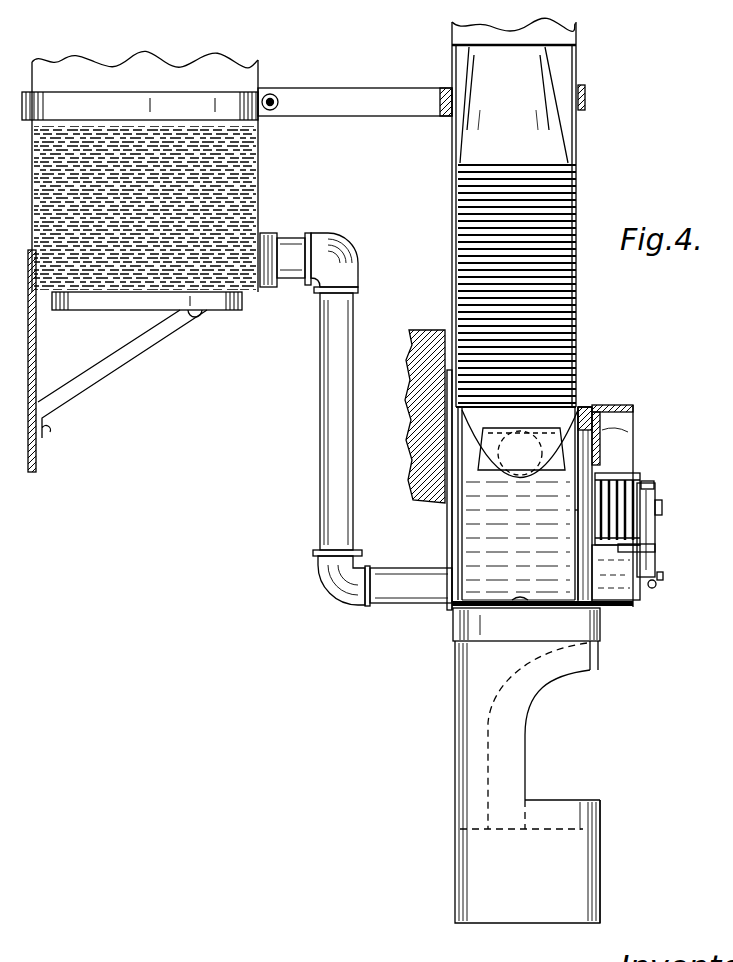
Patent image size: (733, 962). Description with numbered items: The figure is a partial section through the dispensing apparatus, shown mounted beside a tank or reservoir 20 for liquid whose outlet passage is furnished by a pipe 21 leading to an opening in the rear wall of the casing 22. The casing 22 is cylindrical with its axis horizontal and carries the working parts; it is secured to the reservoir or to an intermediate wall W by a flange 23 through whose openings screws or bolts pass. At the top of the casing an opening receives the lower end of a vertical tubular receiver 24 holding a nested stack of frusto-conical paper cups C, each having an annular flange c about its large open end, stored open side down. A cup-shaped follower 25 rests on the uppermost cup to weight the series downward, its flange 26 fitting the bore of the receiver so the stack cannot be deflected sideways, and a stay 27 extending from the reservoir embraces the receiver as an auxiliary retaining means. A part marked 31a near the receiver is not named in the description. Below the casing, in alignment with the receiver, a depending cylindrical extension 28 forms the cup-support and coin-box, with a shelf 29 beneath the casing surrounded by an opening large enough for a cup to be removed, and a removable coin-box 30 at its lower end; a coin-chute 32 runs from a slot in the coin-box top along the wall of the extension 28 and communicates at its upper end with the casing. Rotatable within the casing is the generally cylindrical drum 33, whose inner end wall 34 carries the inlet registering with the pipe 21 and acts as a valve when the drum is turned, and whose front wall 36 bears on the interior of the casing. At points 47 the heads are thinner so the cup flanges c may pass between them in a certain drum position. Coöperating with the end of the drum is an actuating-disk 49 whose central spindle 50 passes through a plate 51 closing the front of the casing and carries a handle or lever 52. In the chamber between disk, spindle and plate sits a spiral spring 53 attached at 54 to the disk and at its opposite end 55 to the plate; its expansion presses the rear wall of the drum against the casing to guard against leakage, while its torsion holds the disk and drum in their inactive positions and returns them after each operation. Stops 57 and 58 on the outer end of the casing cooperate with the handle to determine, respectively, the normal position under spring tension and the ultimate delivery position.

The tank or reservoir 20 is at (258, 180).
The pipe 21 is at (318, 456).
The casing 22 is at (625, 405).
The flange 23 is at (446, 518).
The receiver 24 is at (578, 145).
The follower 25 is at (514, 105).
The flange 26 is at (576, 45).
The stay 27 is at (305, 92).
The depending cylindrical extension 28 is at (442, 686).
The shelf 29 is at (565, 798).
The coin-box 30 is at (602, 872).
The wall 31a is at (585, 420).
The coin-chute 32 is at (515, 668).
The drum 33 is at (533, 603).
The inner end wall 34 is at (454, 546).
The front wall 36 is at (588, 412).
The points 47 is at (476, 603).
The actuating-disk 49 is at (598, 457).
The spindle 50 is at (607, 470).
The plate 51 is at (643, 548).
The handle or lever 52 is at (657, 586).
The spring 53 is at (633, 470).
The attachment point 54 is at (586, 510).
The opposite end 55 is at (652, 487).
The stop 57 is at (662, 574).
The stop 58 is at (662, 506).
The annular flange c is at (576, 170).
The cup C is at (496, 433).
The intermediate wall W is at (421, 332).